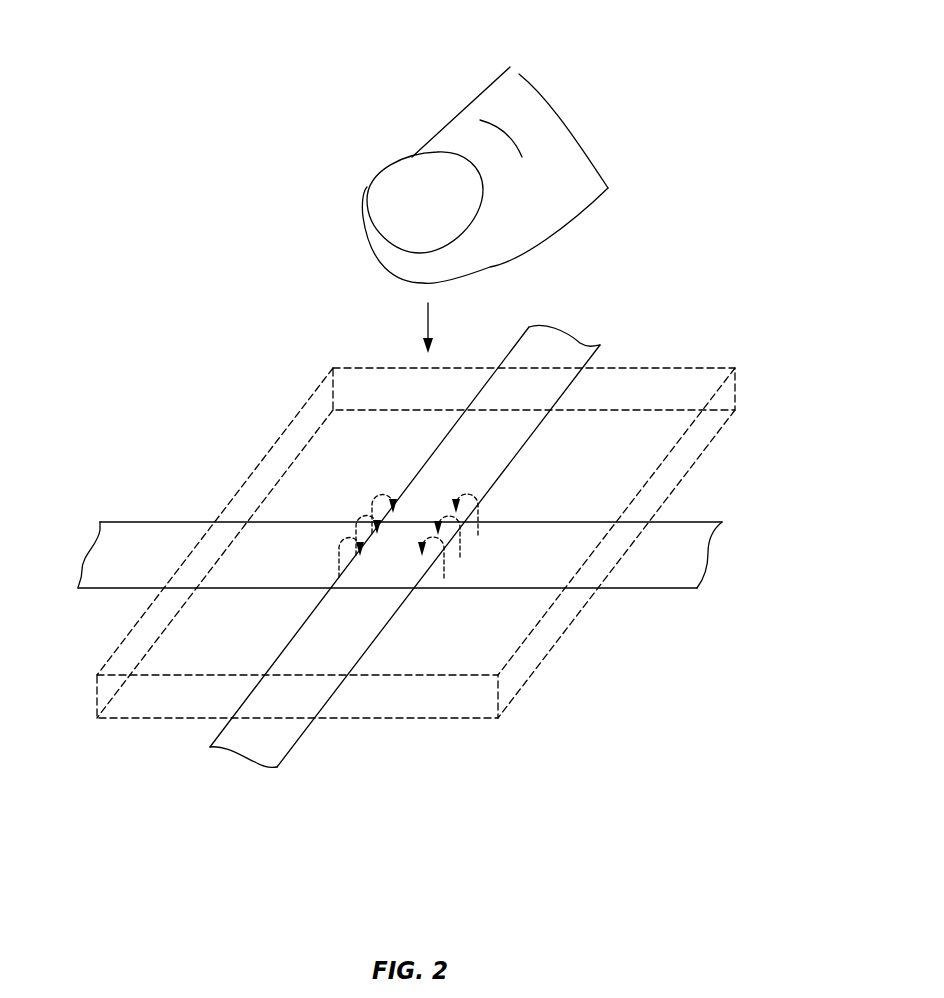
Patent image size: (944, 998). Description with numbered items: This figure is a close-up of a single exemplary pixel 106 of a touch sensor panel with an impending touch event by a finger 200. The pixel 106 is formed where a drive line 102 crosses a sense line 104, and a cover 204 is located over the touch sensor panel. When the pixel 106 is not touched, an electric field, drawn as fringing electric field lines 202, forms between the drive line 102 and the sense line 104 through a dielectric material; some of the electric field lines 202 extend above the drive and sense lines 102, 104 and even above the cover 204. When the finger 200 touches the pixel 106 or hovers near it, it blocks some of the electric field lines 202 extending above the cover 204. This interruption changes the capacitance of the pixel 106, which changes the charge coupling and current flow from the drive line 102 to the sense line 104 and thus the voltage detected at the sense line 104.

The finger 200 is at (455, 110).
The drive line 102 is at (140, 533).
The sense line 104 is at (292, 735).
The electric field lines 202 is at (373, 497).
The cover 204 is at (737, 380).
The pixel 106 is at (531, 762).